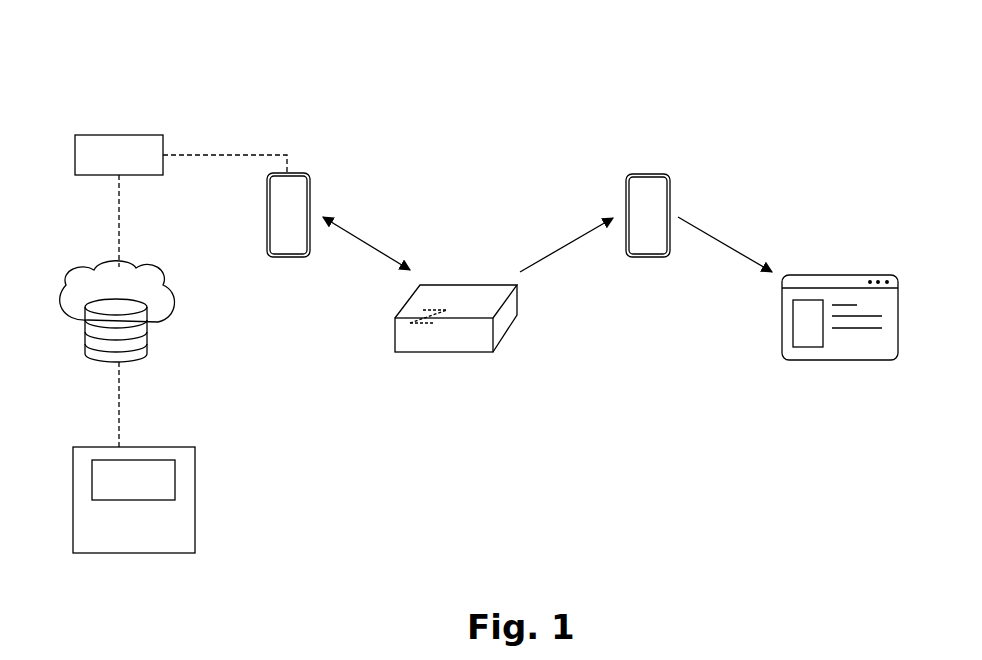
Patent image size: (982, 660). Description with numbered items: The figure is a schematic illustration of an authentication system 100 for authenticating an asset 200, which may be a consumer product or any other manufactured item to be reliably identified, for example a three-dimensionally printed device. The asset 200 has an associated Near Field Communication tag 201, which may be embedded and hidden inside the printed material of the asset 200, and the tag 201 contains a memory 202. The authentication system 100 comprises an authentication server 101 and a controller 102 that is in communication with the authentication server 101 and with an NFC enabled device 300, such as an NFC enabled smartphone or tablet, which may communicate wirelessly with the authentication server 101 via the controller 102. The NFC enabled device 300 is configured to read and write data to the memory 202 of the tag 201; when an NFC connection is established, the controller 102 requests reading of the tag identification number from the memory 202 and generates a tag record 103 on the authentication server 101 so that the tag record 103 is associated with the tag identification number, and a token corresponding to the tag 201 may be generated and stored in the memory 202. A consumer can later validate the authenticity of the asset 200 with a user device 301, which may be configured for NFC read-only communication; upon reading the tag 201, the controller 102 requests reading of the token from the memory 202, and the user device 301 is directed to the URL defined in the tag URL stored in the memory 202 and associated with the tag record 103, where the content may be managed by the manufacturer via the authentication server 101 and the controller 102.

The authentication system 100 is at (108, 50).
The authentication server 101 is at (140, 360).
The controller 102 is at (119, 155).
The tag record 103 is at (134, 500).
The asset 200 is at (510, 318).
The NFC tag 201 is at (432, 323).
The memory 202 is at (474, 372).
The NFC enabled device 300 is at (280, 256).
The user device 301 is at (642, 258).
The tag URL is at (862, 358).